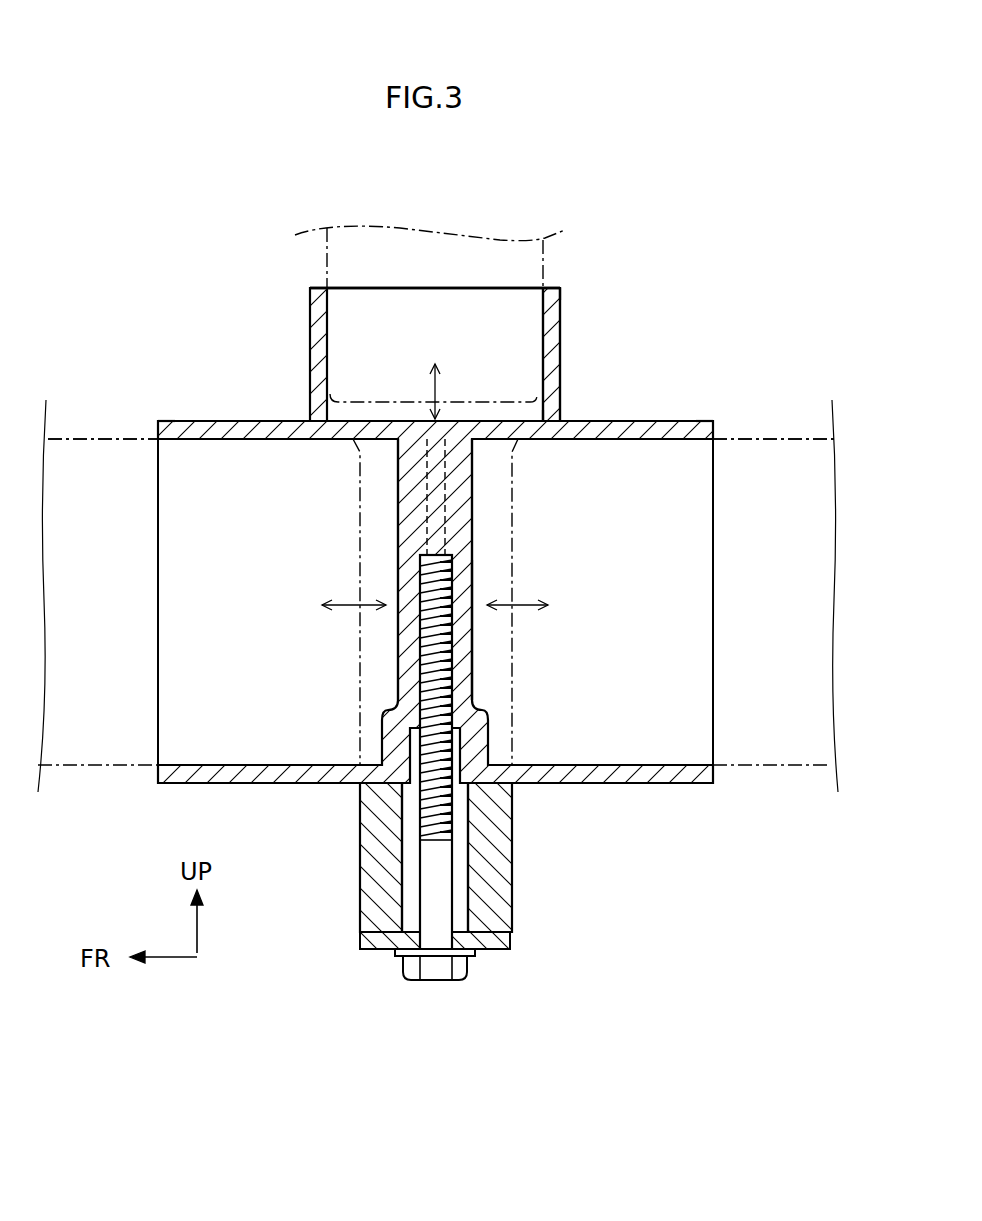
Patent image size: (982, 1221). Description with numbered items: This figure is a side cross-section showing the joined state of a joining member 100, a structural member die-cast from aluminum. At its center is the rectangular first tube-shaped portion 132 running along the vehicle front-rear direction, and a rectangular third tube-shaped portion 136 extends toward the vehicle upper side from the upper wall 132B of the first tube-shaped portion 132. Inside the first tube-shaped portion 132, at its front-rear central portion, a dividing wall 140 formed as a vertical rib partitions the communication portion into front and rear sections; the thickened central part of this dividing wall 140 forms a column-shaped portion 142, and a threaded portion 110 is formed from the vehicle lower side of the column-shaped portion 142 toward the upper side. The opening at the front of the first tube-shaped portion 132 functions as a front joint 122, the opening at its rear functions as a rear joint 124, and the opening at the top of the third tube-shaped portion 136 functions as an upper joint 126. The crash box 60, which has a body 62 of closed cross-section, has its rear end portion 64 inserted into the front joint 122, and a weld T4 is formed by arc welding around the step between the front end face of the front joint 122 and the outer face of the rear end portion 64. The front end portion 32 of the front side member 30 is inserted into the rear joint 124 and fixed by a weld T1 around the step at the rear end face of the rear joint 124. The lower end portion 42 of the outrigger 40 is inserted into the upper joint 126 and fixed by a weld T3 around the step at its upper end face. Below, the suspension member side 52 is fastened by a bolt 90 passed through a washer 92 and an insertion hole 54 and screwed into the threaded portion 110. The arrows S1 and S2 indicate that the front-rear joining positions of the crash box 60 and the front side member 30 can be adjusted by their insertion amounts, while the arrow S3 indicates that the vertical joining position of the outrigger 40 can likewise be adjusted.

The front side member 30 is at (785, 768).
The front end portion 32 is at (640, 740).
The outrigger 40 is at (325, 257).
The lower end portion 42 is at (345, 338).
The suspension member side 52 is at (357, 897).
The insertion hole 54 is at (412, 898).
The crash box 60 is at (90, 768).
The body 62 is at (108, 740).
The rear end portion 64 is at (258, 740).
The bolt 90 is at (437, 967).
The washer 92 is at (490, 942).
The joining member 100 is at (668, 420).
The threaded portion 110 is at (447, 690).
The front joint 122 is at (180, 442).
The rear joint 124 is at (682, 445).
The upper joint 126 is at (518, 303).
The first tube-shaped portion 132 is at (236, 440).
The upper wall 132B is at (518, 412).
The third tube-shaped portion 136 is at (553, 327).
The dividing wall 140 is at (450, 488).
The column-shaped portion 142 is at (473, 578).
The weld T1 is at (728, 440).
The weld T3 is at (540, 300).
The weld T4 is at (140, 438).
The front-rear direction joining position adjustment S1 is at (358, 618).
The front-rear direction joining position adjustment S2 is at (512, 618).
The vertical direction joining position adjustment S3 is at (445, 380).